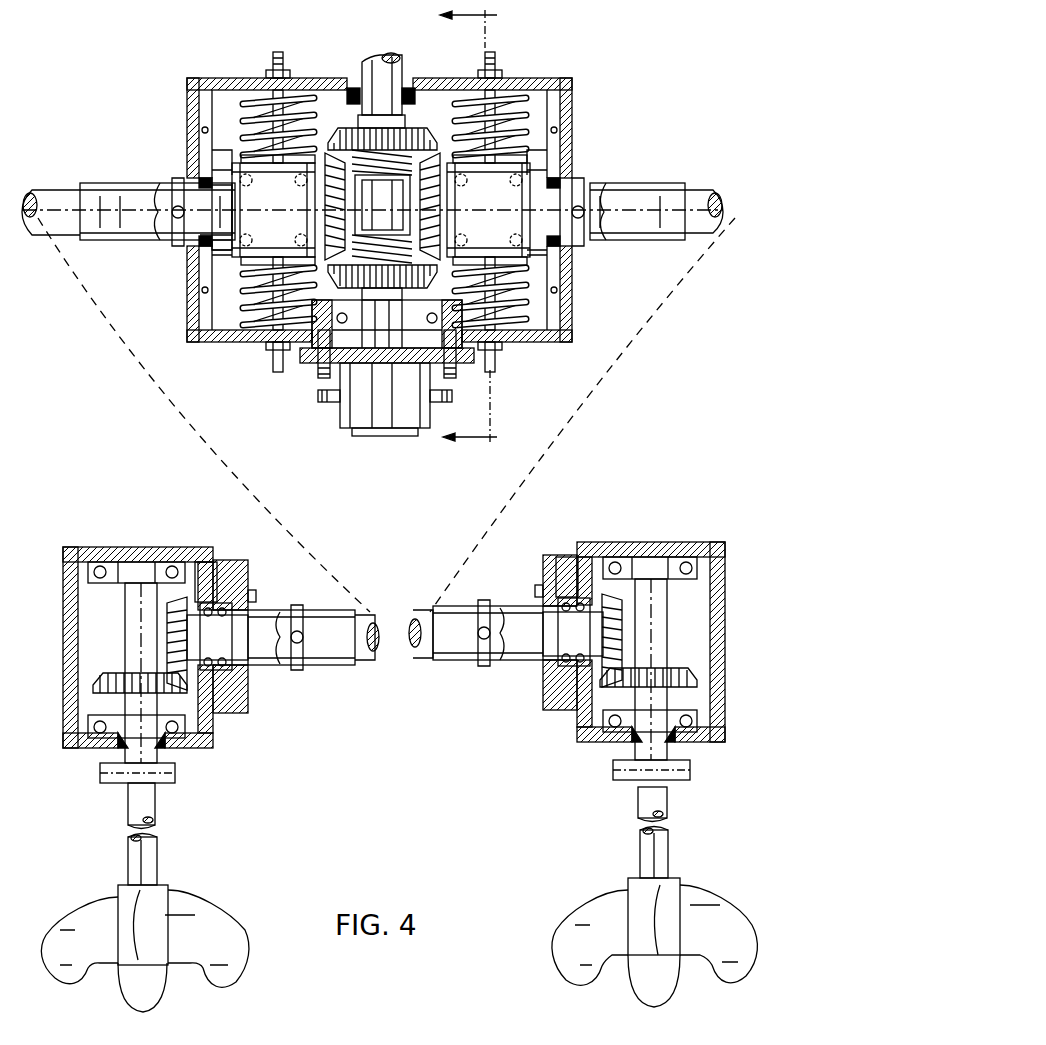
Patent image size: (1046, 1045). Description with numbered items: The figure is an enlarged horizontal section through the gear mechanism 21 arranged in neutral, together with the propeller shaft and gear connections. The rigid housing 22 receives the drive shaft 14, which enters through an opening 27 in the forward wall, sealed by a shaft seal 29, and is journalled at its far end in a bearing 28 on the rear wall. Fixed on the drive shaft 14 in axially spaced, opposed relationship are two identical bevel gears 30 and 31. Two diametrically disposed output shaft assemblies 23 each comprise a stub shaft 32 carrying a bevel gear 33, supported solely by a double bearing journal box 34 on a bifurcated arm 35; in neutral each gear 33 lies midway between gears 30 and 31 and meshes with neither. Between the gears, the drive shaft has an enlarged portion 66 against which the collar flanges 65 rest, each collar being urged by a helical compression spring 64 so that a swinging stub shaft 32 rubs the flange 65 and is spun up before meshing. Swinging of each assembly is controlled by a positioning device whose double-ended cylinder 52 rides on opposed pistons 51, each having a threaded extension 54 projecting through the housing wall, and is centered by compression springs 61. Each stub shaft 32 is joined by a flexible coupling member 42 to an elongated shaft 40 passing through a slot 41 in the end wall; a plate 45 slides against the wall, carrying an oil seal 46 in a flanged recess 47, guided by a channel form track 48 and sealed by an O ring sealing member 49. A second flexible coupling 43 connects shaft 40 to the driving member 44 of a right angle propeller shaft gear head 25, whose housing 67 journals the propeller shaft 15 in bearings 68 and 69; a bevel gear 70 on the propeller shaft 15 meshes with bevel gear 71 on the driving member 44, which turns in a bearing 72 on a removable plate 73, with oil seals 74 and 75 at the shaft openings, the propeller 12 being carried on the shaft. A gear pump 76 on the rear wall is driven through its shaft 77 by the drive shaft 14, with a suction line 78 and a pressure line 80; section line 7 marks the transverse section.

The section line 7— 7 is at (473, 227).
The propeller 12 is at (236, 968).
The drive shaft 14 is at (366, 62).
The propeller shaft 15 is at (128, 812).
The gear mechanism 21 is at (178, 64).
The housing 22 is at (195, 108).
The output shaft assembly 23 is at (226, 165).
The right angle propeller shaft gear head 25 is at (124, 538).
The opening 27 is at (396, 47).
The bearing 28 is at (332, 356).
The shaft seal 29 is at (350, 94).
The bevel gear 30 is at (404, 130).
The bevel gear 31 is at (342, 292).
The stub shaft 32 is at (372, 210).
The bevel gear 33 is at (333, 150).
The double bearing journal box 34 is at (212, 262).
The bifurcated arm 35 is at (381, 214).
The elongated shaft 40 is at (50, 190).
The slot 41 is at (196, 258).
The flexible coupling member 42 is at (110, 240).
The second flexible coupling 43 is at (305, 615).
The driving member 44 is at (236, 628).
The plate 45 is at (205, 150).
The oil seal 46 is at (200, 180).
The flanged recess 47 is at (212, 250).
The channel form track 48 is at (526, 84).
The O ring sealing member 49 is at (200, 135).
The piston 51 is at (238, 94).
The double-ended cylinder 52 is at (240, 135).
The threaded extension 54 is at (497, 56).
The compression spring 61 is at (272, 108).
The helical coil compression spring 64 is at (452, 352).
The annular flange 65 is at (382, 206).
The enlarged drive shaft portion 66 is at (382, 205).
The housing 67 is at (62, 602).
The bearing 68 is at (163, 563).
The bearing 69 is at (92, 722).
The bevel gear 70 is at (104, 676).
The bevel gear 71 is at (172, 600).
The bearing 72 is at (218, 560).
The removable plate 73 is at (248, 700).
The oil seal 74 is at (168, 752).
The oil seal 75 is at (240, 667).
The gear pump 76 is at (356, 430).
The pump shaft 77 is at (378, 345).
The suction line 78 is at (324, 400).
The pressure line 80 is at (446, 404).